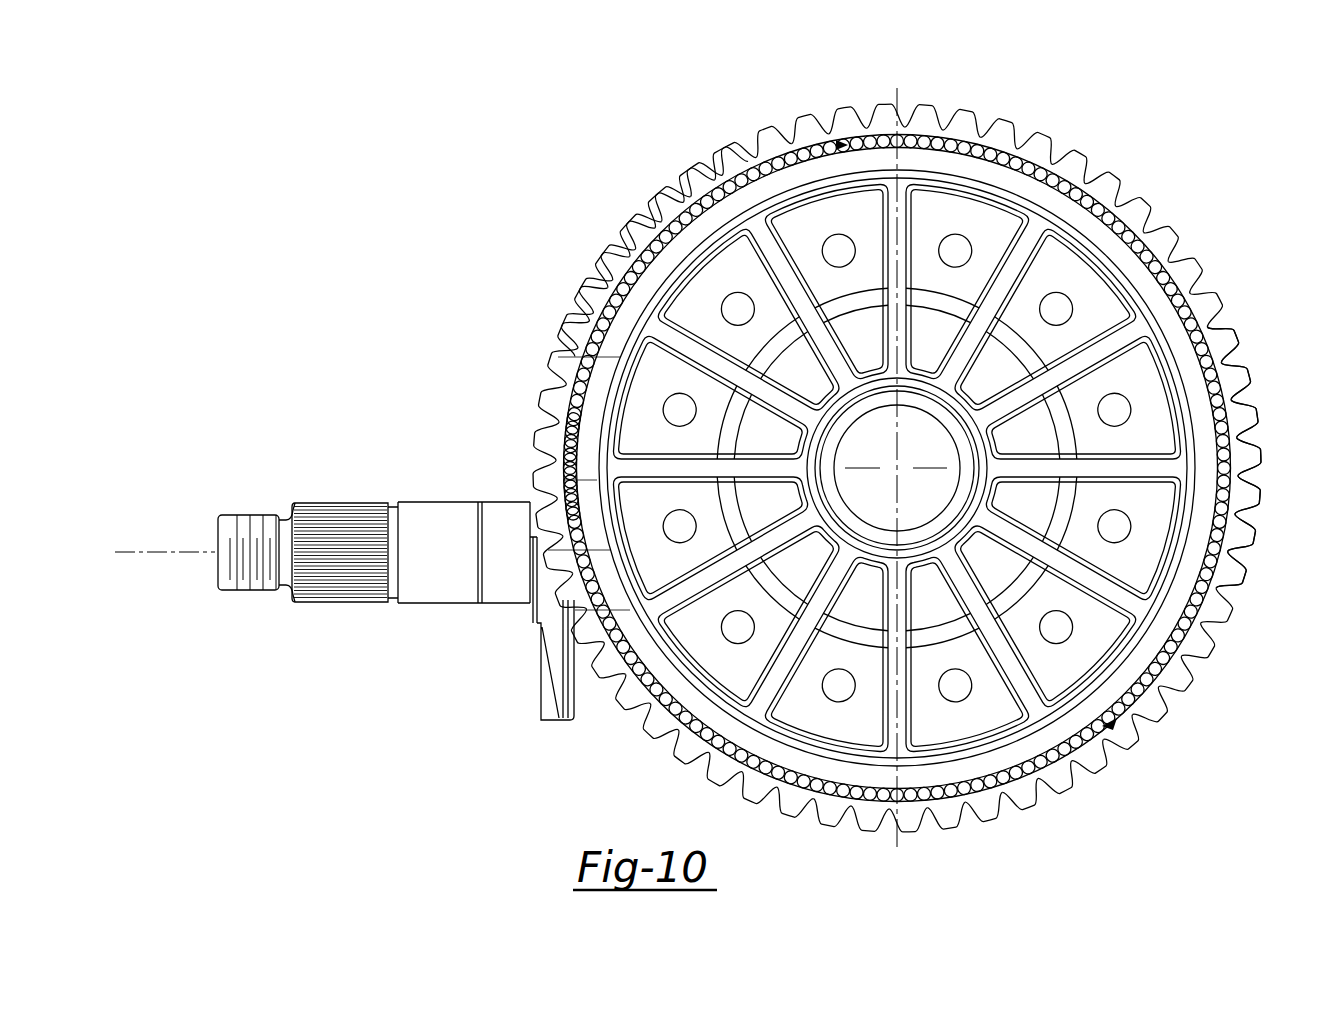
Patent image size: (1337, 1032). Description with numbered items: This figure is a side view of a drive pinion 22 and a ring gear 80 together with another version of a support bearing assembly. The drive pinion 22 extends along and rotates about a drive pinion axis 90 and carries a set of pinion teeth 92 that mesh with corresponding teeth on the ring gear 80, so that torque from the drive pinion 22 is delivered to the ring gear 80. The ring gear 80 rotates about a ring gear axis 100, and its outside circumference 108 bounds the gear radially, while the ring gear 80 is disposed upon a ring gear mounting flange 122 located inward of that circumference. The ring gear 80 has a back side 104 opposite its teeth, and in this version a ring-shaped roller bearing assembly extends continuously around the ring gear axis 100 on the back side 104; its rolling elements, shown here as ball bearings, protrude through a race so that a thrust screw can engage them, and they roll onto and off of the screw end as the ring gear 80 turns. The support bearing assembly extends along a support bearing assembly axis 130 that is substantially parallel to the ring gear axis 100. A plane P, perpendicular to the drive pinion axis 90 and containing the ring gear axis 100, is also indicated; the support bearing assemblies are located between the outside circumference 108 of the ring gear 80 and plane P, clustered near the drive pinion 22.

The ring gear 80 is at (721, 468).
The outside circumference 108 is at (897, 468).
The back side 104 is at (1225, 460).
The support bearing assembly axis 130 is at (574, 465).
The ring gear mounting flange 122 is at (897, 468).
The ring gear axis 100 is at (897, 468).
The plane P is at (901, 489).
The drive pinion axis 90 is at (184, 540).
The drive pinion 22 is at (246, 513).
The pinion teeth 92 is at (594, 692).